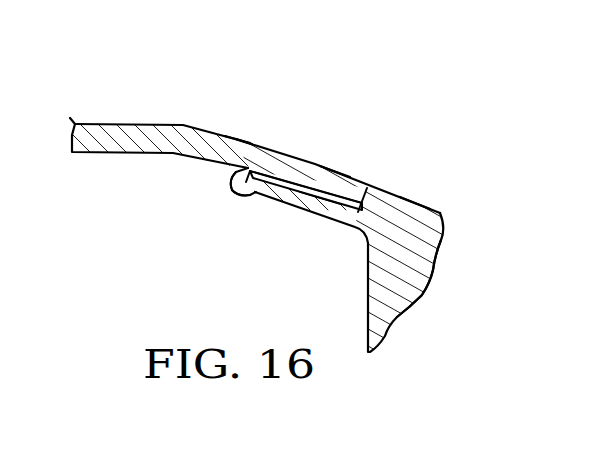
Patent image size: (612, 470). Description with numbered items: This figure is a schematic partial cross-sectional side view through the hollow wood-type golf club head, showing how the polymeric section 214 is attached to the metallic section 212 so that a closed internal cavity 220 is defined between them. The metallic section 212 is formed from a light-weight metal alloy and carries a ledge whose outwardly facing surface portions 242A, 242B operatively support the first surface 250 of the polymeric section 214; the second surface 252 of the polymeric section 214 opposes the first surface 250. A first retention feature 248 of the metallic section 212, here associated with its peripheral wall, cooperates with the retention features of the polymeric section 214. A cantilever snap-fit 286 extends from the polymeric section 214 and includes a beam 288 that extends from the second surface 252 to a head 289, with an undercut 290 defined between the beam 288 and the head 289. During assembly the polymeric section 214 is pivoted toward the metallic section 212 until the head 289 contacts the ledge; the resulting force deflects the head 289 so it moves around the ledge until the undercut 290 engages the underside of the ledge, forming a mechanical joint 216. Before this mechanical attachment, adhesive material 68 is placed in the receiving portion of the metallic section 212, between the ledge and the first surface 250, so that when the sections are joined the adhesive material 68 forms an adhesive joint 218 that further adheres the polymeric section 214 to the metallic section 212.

The polymeric section 214 is at (123, 124).
The second surface 252 is at (238, 130).
The beam 288 is at (241, 142).
The undercut 290 is at (249, 182).
The adhesive material 68 is at (314, 183).
The second wall of channel 242B is at (335, 170).
The adhesive joint 218 is at (346, 152).
The first wall of channel 242A is at (416, 204).
The cantilever snap-fit 286 is at (232, 188).
The closed internal cavity 220 is at (145, 239).
The mechanical joint 216 is at (219, 211).
The head 289 is at (236, 198).
The first retention feature 248 is at (262, 195).
The first surface 250 is at (328, 207).
The metallic section 212 is at (420, 275).